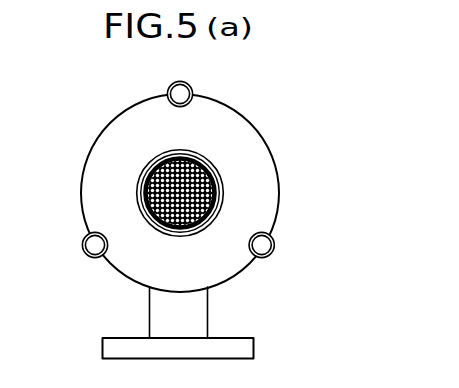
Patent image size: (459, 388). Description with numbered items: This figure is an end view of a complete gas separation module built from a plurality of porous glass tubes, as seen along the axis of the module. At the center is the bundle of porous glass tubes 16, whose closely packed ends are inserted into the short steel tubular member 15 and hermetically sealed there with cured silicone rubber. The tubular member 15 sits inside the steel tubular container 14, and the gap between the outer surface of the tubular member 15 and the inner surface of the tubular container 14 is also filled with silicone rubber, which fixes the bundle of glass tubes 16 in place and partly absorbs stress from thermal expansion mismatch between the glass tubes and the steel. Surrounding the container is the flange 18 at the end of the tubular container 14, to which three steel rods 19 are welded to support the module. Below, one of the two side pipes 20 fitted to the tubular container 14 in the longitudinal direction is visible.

The tubular container 14 is at (220, 172).
The tubular member 15 is at (221, 190).
The bundle of porous glass tubes 16 is at (203, 227).
The flange 18 is at (233, 115).
The steel rods 19 is at (190, 85).
The side pipes 20 is at (201, 313).